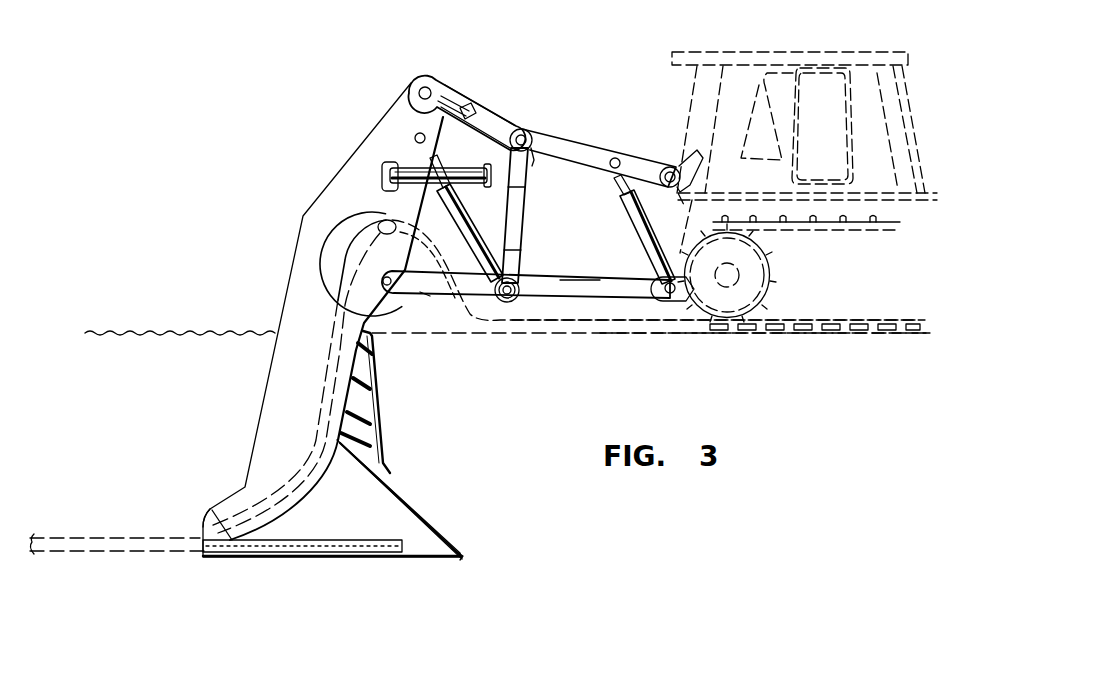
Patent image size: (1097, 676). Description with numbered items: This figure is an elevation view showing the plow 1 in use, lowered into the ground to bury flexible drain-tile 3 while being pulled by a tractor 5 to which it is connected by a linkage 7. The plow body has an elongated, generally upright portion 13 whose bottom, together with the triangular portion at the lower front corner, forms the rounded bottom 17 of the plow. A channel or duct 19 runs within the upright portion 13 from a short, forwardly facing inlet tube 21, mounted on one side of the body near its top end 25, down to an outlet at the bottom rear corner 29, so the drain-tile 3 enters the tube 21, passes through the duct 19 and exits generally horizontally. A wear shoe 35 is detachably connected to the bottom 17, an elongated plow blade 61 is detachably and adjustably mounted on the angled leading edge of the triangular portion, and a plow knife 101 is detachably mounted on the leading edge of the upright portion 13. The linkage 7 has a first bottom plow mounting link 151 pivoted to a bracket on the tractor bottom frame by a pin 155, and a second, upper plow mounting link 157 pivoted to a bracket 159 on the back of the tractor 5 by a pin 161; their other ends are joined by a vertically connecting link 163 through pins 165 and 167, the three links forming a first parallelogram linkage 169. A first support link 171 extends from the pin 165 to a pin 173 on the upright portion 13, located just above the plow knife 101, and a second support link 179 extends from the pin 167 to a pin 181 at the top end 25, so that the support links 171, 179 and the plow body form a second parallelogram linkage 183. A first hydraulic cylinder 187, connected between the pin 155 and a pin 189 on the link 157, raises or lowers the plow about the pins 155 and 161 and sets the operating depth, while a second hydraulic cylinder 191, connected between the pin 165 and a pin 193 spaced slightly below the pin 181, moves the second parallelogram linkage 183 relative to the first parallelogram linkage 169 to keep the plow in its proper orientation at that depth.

The plow 1 is at (278, 224).
The drain-tile 3 is at (190, 536).
The tractor 5 is at (828, 44).
The linkage 7 is at (560, 120).
The upright portion 13 is at (288, 300).
The bottom 17 is at (436, 557).
The channel or duct 19 is at (327, 393).
The inlet tube 21 is at (421, 229).
The top end 25 is at (432, 50).
The bottom rear corner 29 is at (210, 512).
The wear shoe 35 is at (333, 540).
The plow blade 61 is at (415, 492).
The plow knife 101 is at (388, 414).
The first bottom plow mounting link 151 is at (576, 300).
The pin 155 is at (660, 300).
The second, upper plow mounting link 157 is at (596, 140).
The bracket 159 is at (697, 150).
The pin 161 is at (690, 148).
The vertically connecting link 163 is at (524, 224).
The pin 165 is at (515, 282).
The pin 167 is at (535, 152).
The first parallelogram linkage 169 is at (527, 300).
The first support link 171 is at (432, 300).
The pin 173 is at (394, 294).
The second support link 179 is at (498, 124).
The pin 181 is at (418, 93).
The second parallelogram linkage 183 is at (528, 126).
The first hydraulic cylinder 187 is at (646, 262).
The pin 189 is at (619, 158).
The second hydraulic cylinder 191 is at (482, 234).
The pin 193 is at (414, 138).